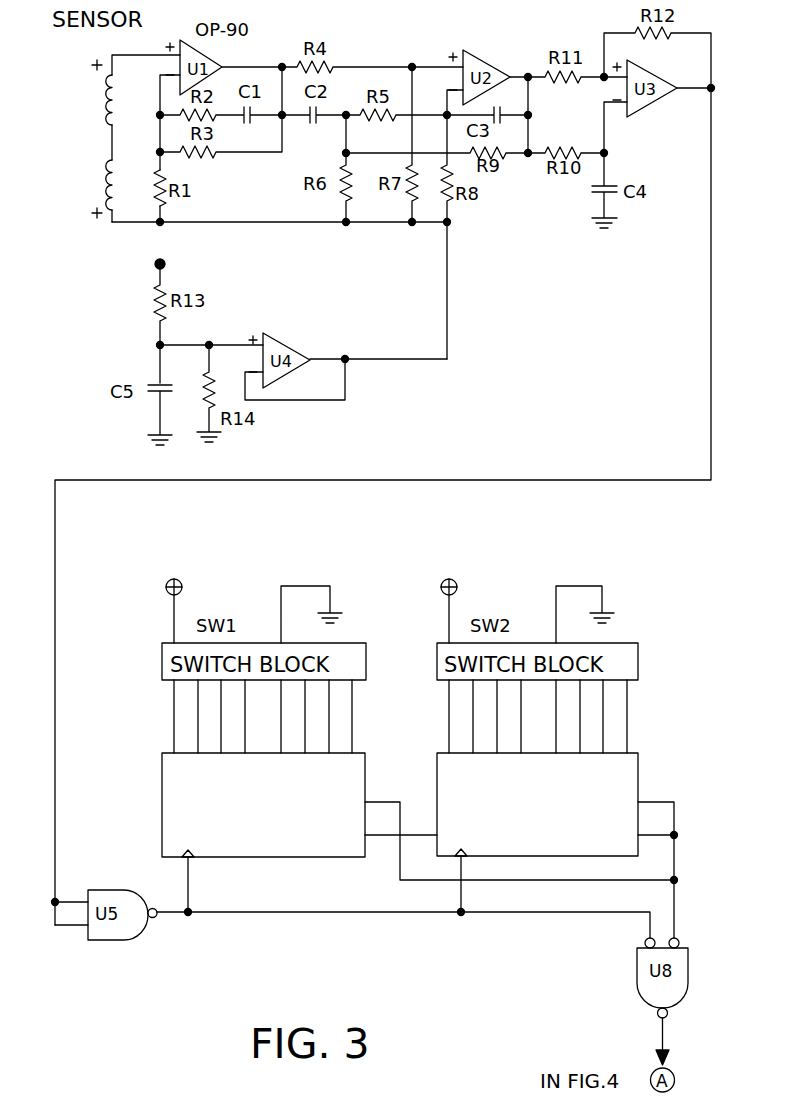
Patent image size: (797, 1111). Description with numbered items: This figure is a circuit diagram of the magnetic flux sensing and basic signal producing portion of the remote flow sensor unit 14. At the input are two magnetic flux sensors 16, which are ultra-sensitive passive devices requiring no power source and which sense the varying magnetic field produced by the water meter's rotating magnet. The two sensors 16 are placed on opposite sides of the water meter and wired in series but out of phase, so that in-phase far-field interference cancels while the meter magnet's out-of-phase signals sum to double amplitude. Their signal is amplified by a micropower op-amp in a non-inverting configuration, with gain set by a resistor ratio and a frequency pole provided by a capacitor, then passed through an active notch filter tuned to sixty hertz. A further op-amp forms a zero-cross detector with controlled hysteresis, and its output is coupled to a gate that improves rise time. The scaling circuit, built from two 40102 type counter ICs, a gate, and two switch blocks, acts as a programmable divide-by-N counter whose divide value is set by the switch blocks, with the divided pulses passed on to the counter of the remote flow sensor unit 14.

The magnetic flux sensor 16 is at (88, 119).
The remote flow sensor unit 14 is at (723, 52).
The presettable counter 40102 is at (400, 805).